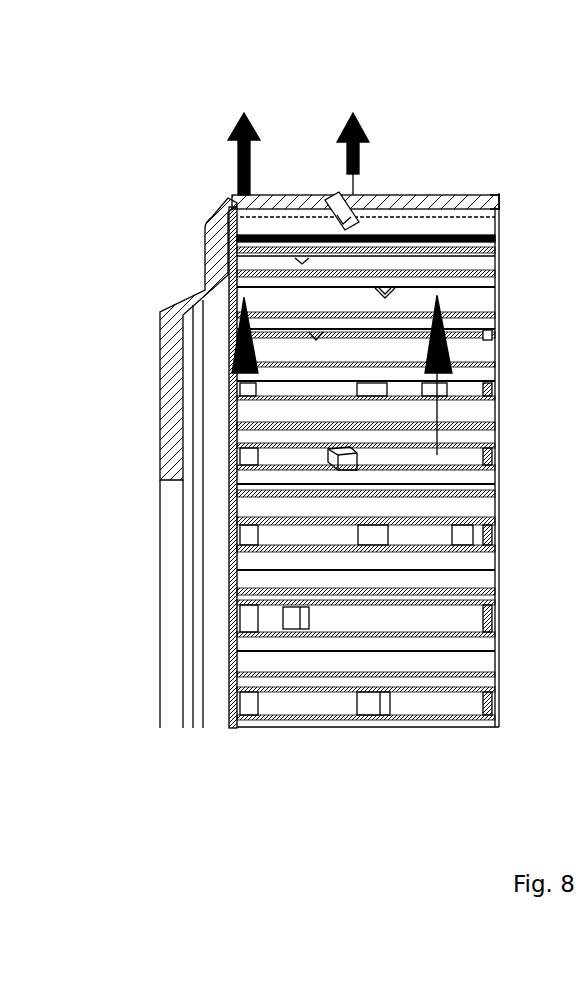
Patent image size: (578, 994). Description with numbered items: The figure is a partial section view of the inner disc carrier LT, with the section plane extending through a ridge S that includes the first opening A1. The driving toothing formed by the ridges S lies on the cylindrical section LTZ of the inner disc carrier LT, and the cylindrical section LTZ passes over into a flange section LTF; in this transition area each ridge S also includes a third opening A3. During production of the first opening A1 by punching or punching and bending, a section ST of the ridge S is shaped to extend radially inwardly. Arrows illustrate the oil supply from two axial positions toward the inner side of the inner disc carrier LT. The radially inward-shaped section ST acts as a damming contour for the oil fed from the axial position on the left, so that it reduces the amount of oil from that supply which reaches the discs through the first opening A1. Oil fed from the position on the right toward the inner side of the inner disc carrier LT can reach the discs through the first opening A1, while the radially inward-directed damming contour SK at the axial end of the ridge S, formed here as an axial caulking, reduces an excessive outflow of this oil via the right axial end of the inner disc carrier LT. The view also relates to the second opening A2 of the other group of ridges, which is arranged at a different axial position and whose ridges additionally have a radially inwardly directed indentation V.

The first opening A1 is at (335, 172).
The second opening A2 is at (460, 516).
The third opening A3 is at (236, 186).
The section ST is at (330, 192).
The ridge S is at (400, 195).
The damming contour SK is at (505, 207).
The flange section LTF is at (168, 311).
The indentation V is at (352, 543).
The inner disc carrier LT is at (266, 771).
The cylindrical section LTZ is at (385, 762).